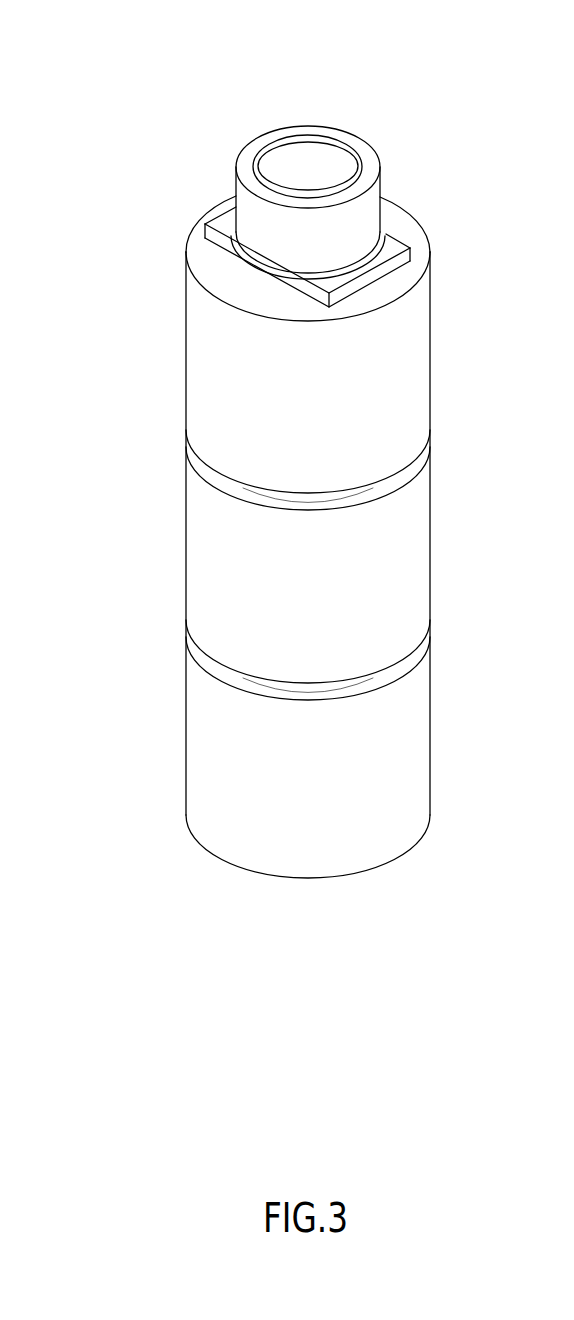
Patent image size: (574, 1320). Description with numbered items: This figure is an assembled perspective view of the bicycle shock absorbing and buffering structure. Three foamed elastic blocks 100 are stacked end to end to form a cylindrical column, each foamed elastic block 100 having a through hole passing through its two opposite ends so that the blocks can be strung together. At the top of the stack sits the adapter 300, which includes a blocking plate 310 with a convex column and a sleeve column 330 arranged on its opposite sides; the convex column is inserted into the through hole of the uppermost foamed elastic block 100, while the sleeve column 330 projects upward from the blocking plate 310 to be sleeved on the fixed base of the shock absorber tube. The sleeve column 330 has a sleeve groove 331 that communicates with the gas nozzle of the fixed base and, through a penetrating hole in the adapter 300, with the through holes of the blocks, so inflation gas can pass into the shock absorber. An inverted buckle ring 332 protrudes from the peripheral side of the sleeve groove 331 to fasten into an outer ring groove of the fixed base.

The foamed elastic block 100 is at (198, 390).
The adapter 300 is at (252, 155).
The blocking plate 310 is at (220, 240).
The sleeve column 330 is at (245, 206).
The sleeve groove 331 is at (313, 170).
The inverted buckle ring 332 is at (260, 163).